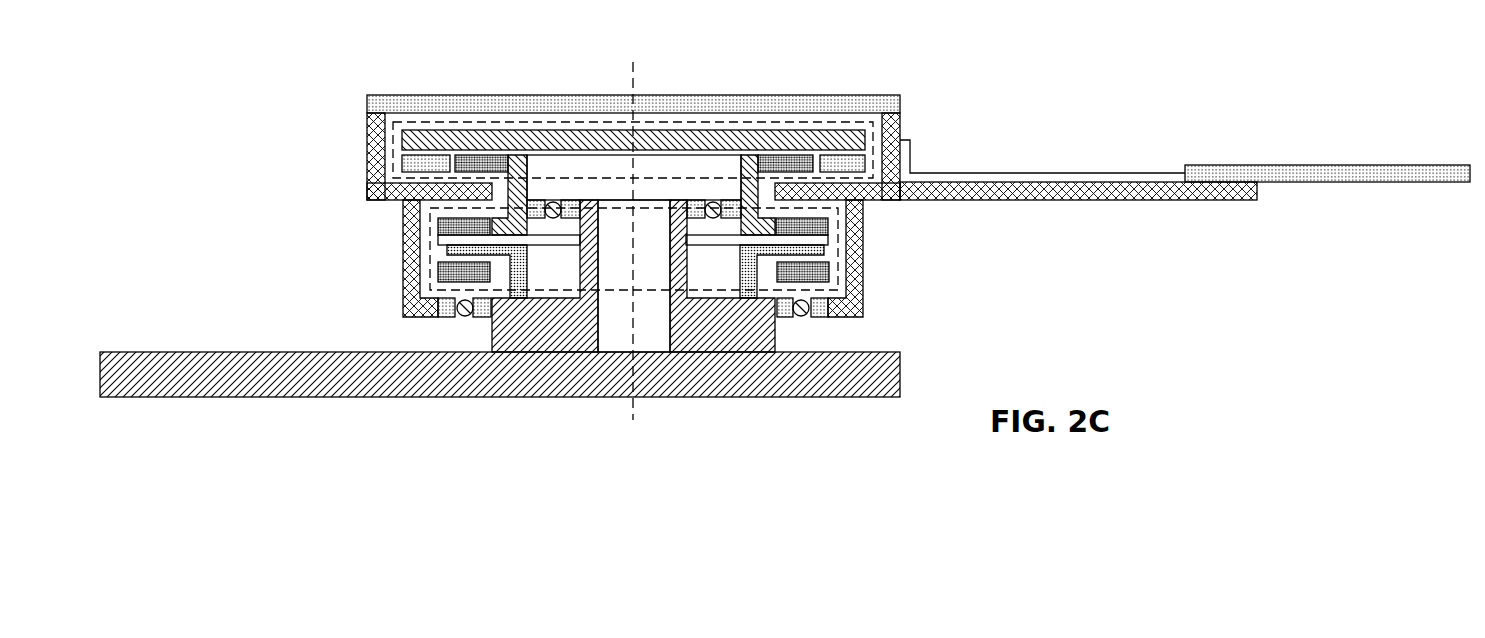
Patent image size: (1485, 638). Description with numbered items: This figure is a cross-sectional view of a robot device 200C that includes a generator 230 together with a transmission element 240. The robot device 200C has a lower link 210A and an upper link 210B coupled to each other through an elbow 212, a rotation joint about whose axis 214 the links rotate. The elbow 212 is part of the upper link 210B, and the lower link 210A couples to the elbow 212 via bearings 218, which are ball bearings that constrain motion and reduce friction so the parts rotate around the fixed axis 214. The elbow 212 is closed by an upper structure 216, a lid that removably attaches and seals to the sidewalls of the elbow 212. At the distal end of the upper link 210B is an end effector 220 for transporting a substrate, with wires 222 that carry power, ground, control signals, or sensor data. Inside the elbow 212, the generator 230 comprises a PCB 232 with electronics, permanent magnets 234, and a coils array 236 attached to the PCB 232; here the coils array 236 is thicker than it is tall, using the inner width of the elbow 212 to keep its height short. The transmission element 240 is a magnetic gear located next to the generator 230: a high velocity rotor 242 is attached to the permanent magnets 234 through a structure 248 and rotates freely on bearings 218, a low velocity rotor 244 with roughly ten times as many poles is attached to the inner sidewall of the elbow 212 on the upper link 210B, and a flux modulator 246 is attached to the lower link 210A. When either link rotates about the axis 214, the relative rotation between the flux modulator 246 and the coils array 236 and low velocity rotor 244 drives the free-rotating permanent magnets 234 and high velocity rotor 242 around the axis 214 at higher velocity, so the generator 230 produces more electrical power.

The robot device 200C is at (207, 102).
The link 210A is at (167, 352).
The link 210B is at (1150, 203).
The elbow 212 is at (332, 131).
The axis 214 is at (637, 82).
The upper structure 216 is at (901, 95).
The bearings 218 is at (465, 316).
The end effector 220 is at (1325, 165).
The wires 222 is at (1126, 173).
The generator 230 is at (686, 118).
The PCB 232 is at (847, 130).
The permanent magnets 234 is at (475, 155).
The coils array 236 is at (402, 163).
The transmission element 240 is at (838, 255).
The high velocity rotor 242 is at (437, 219).
The low velocity rotor 244 is at (455, 283).
The flux modulator 246 is at (572, 282).
The structure 248 is at (592, 178).